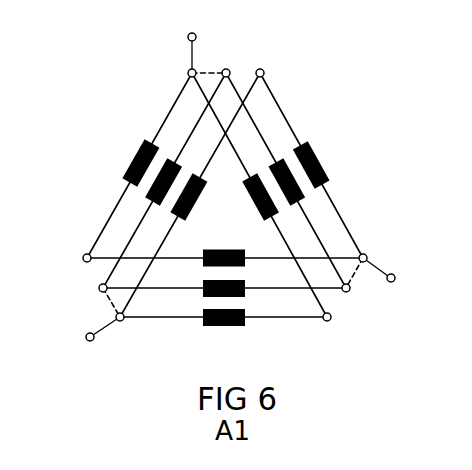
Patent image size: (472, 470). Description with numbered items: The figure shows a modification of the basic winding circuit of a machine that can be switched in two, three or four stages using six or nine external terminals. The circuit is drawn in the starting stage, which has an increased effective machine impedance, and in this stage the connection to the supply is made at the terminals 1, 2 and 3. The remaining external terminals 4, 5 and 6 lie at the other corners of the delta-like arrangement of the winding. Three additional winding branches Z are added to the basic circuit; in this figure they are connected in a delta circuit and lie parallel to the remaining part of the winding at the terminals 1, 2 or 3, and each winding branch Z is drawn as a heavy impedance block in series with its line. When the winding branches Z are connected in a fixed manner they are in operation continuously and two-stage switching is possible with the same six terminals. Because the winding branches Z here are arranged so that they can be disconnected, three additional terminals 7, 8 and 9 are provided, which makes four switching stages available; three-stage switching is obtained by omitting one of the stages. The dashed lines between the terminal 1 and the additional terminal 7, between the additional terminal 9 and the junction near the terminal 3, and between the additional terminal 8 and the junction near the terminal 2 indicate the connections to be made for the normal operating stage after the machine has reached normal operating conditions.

The terminal 1 is at (191, 33).
The terminal 2 is at (395, 279).
The terminal 3 is at (86, 337).
The node 4 is at (259, 69).
The node 5 is at (331, 318).
The node 6 is at (83, 259).
The additional terminal 7 is at (223, 69).
The additional terminal 8 is at (350, 289).
The additional terminal 9 is at (99, 289).
The additional winding branch Z is at (164, 163).